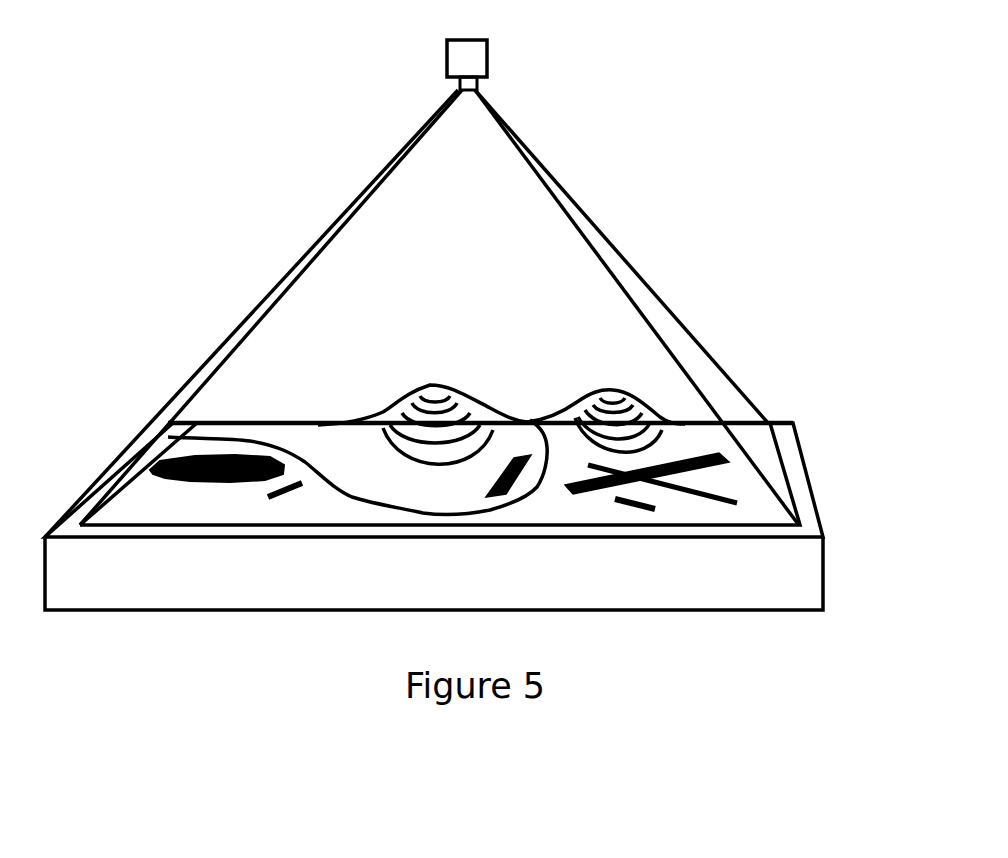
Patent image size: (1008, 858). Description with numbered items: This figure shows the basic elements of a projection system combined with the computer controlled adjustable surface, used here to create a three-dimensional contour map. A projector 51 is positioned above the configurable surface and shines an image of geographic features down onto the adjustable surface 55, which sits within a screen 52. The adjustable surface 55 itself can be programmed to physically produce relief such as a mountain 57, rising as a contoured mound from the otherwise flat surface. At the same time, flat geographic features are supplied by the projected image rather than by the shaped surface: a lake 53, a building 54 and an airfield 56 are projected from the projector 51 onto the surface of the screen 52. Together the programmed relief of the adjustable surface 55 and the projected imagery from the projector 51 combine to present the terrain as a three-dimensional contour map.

The projector 51 is at (487, 50).
The screen 52 is at (818, 567).
The lake 53 is at (200, 458).
The building 54 is at (522, 458).
The adjustable surface 55 is at (445, 499).
The airfield 56 is at (708, 457).
The mountain 57 is at (412, 402).